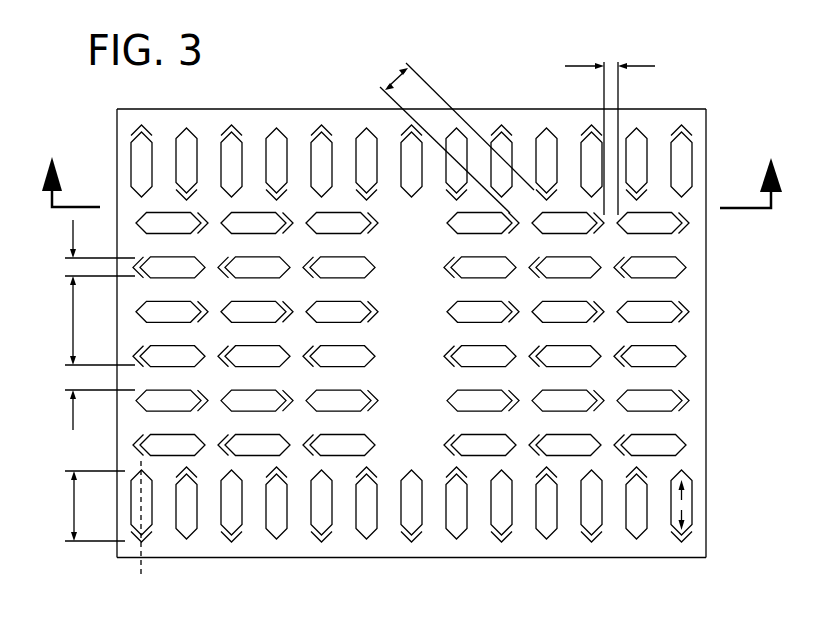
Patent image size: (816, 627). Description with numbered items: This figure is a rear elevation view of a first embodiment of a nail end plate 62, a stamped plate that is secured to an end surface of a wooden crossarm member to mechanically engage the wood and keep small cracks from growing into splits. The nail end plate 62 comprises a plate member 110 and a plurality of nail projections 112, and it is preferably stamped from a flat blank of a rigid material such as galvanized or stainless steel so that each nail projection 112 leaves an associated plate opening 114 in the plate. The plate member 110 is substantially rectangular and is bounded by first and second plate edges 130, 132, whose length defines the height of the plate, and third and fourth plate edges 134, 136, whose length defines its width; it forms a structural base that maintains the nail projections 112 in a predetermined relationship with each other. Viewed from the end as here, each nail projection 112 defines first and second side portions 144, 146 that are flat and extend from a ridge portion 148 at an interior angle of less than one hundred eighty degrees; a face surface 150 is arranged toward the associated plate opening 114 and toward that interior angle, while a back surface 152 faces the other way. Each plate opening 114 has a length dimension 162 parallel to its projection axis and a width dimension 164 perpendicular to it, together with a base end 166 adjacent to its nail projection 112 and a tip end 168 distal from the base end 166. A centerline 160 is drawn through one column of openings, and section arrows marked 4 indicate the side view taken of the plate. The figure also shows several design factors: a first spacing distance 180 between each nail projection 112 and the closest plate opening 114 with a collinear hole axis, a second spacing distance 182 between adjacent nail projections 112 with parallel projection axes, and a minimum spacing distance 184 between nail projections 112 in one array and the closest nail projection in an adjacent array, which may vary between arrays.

The section line 4- 4 is at (412, 170).
The nail end plate 62 is at (106, 103).
The plate member 110 is at (125, 168).
The nail projections 112 is at (280, 485).
The plate openings 114 is at (413, 522).
The first plate edge 130 is at (706, 258).
The second plate edge 132 is at (117, 452).
The third plate edge 134 is at (490, 109).
The fourth plate edge 136 is at (550, 558).
The first side portion 144 is at (683, 302).
The second side portion 146 is at (683, 318).
The ridge portion 148 is at (688, 313).
The face surface 150 is at (667, 392).
The back surface 152 is at (683, 405).
The centerline 160 is at (138, 569).
The length dimension 162 is at (72, 507).
The width dimension 164 is at (72, 267).
The base end 166 is at (684, 510).
The tip end 168 is at (684, 500).
The first spacing distance 180 is at (618, 62).
The second spacing distance 182 is at (75, 377).
The minimum spacing distance 184 is at (396, 80).